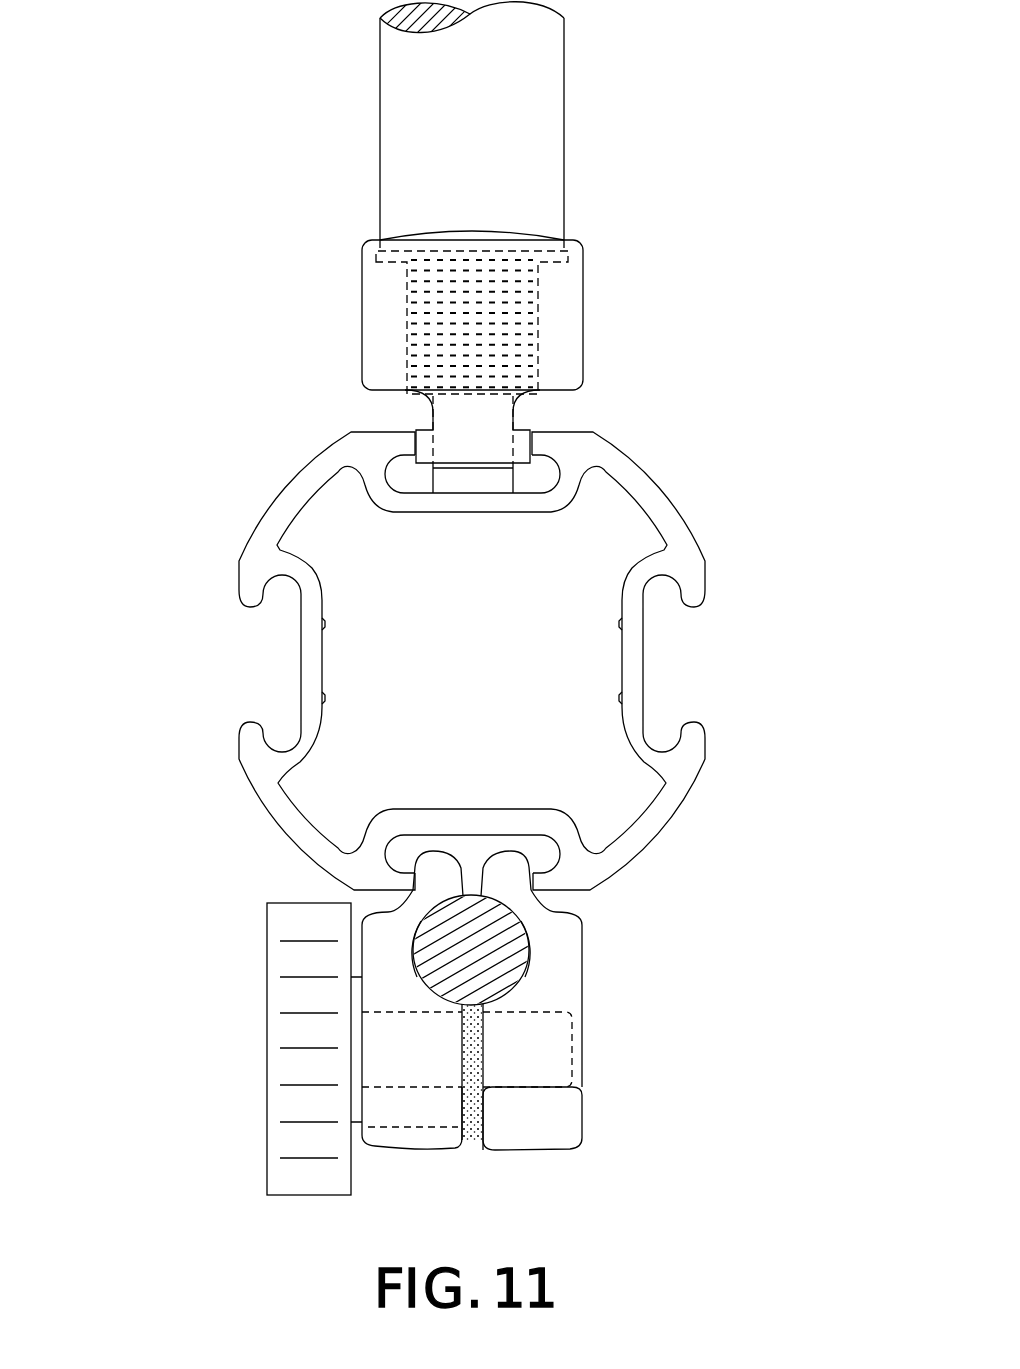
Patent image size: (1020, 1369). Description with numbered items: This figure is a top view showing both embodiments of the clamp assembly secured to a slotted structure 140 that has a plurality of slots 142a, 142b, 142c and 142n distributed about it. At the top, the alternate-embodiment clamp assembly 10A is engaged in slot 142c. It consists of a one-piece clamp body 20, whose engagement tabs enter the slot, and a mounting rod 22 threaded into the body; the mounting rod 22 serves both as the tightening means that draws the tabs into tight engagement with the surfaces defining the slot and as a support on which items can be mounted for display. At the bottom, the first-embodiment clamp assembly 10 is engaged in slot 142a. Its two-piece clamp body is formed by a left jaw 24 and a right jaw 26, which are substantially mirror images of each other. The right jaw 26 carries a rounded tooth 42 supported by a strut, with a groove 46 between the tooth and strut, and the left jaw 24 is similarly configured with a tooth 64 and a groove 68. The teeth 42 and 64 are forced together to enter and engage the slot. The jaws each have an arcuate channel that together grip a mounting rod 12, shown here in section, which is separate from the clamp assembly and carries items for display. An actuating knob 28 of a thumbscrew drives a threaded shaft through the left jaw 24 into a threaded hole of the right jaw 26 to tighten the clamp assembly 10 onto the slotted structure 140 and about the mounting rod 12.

The mounting rod 22 is at (566, 50).
The clamp assembly 10A is at (460, 317).
The one-piece clamp body 20 is at (586, 312).
The slotted structure 140 is at (467, 624).
The slot 142c is at (537, 480).
The slot 142a is at (473, 850).
The slot 142n is at (255, 660).
The slot 142b is at (672, 658).
The mounting rod 12 is at (490, 943).
The clamp assembly 10 is at (507, 973).
The tooth 64 is at (445, 867).
The tooth 42 is at (501, 867).
The groove 68 is at (410, 873).
The groove 46 is at (530, 873).
The left jaw 24 is at (410, 1155).
The right jaw 26 is at (533, 1157).
The actuating knob 28 is at (280, 1028).